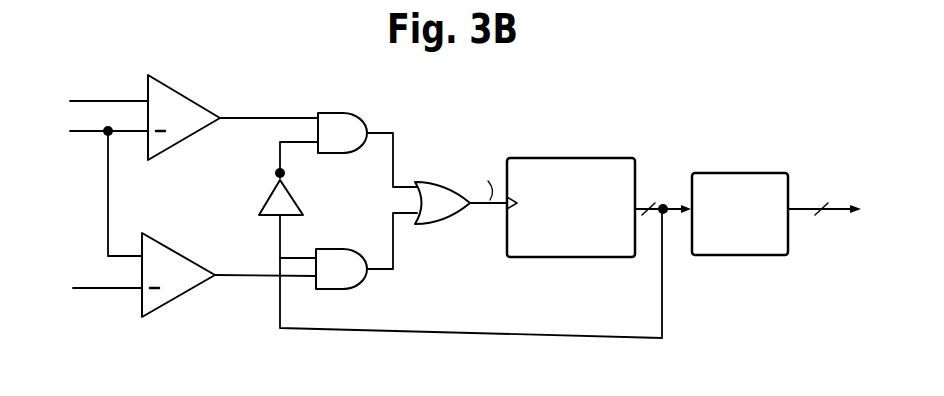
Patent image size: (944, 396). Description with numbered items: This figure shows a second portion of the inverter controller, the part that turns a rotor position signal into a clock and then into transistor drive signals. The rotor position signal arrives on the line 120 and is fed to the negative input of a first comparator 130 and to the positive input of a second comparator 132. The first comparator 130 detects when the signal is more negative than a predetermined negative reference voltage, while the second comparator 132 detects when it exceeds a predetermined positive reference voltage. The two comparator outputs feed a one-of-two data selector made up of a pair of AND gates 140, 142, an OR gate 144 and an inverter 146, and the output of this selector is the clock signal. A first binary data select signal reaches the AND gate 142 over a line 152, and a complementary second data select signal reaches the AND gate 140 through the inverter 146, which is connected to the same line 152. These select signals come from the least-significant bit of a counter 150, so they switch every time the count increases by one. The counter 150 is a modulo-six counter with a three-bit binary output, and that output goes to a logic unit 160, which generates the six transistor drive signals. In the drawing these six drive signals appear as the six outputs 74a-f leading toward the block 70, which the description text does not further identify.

The counter circuit 70 is at (630, 82).
The line 120 is at (92, 134).
The first comparator 130 is at (173, 147).
The second comparator 132 is at (163, 308).
The AND gate 140 is at (357, 113).
The AND gate 142 is at (360, 286).
The OR gate 144 is at (424, 223).
The inverter 146 is at (301, 208).
The counter 150 is at (588, 157).
The line 152 is at (348, 330).
The logic unit 160 is at (762, 173).
The output lines 74a-f is at (837, 220).